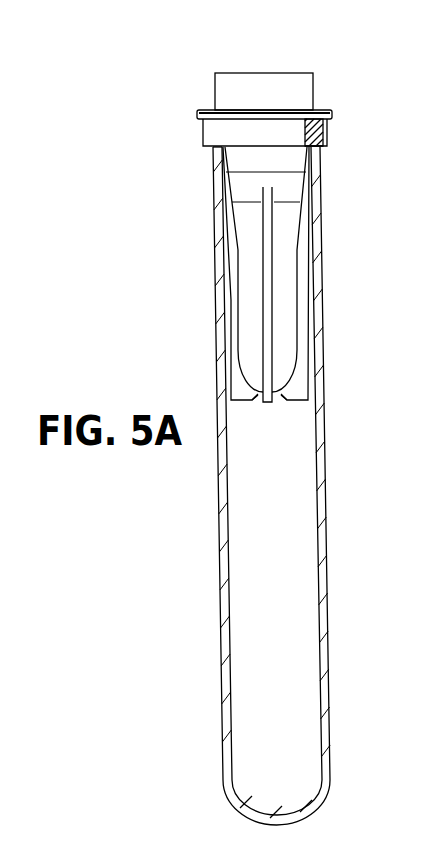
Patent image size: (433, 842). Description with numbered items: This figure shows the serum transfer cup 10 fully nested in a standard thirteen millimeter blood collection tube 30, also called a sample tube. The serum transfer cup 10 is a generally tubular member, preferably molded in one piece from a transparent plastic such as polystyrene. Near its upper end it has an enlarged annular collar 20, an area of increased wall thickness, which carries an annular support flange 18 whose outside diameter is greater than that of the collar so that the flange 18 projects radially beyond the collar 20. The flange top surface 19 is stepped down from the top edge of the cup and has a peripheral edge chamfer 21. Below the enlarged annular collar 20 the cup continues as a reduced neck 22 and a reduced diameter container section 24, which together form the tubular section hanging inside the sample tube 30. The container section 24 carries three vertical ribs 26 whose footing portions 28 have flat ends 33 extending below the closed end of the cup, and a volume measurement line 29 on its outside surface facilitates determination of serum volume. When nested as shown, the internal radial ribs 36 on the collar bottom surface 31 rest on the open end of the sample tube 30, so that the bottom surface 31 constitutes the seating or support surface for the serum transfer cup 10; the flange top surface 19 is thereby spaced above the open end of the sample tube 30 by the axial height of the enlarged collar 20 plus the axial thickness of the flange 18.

The serum transfer cup 10 is at (299, 62).
The annular support flange 18 is at (331, 112).
The flange top surface 19 is at (322, 109).
The enlarged annular collar 20 is at (304, 131).
The peripheral edge chamfer 21 is at (198, 113).
The reduced neck 22 is at (306, 176).
The reduced diameter container section 24 is at (290, 246).
The vertical ribs 26 is at (233, 286).
The footing portions 28 is at (302, 389).
The volume measurement line 29 is at (250, 202).
The 13 mm blood collection tube 30 is at (325, 490).
The bottom surface of the annular collar 31 is at (203, 147).
The flat ends 33 is at (292, 402).
The internal radial ribs 36 is at (322, 142).